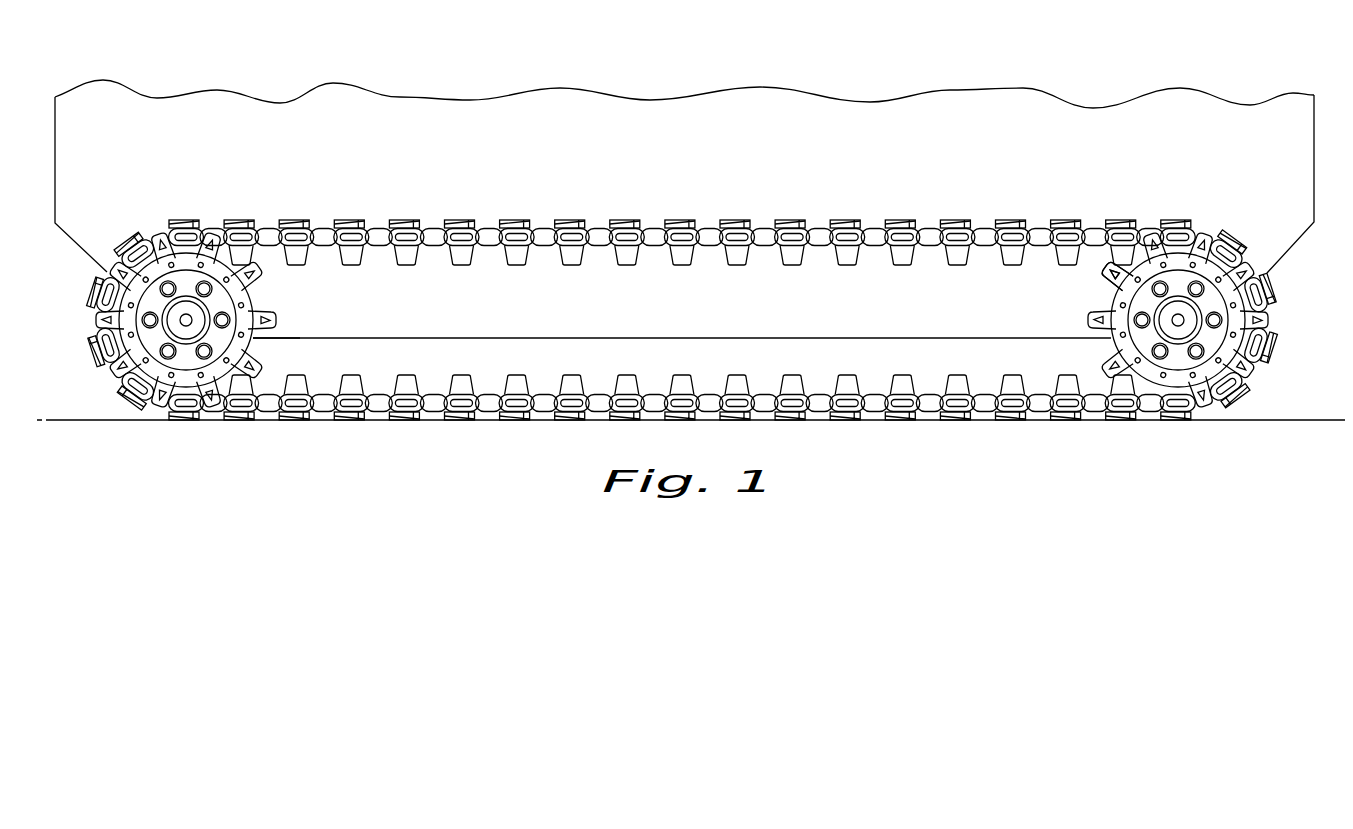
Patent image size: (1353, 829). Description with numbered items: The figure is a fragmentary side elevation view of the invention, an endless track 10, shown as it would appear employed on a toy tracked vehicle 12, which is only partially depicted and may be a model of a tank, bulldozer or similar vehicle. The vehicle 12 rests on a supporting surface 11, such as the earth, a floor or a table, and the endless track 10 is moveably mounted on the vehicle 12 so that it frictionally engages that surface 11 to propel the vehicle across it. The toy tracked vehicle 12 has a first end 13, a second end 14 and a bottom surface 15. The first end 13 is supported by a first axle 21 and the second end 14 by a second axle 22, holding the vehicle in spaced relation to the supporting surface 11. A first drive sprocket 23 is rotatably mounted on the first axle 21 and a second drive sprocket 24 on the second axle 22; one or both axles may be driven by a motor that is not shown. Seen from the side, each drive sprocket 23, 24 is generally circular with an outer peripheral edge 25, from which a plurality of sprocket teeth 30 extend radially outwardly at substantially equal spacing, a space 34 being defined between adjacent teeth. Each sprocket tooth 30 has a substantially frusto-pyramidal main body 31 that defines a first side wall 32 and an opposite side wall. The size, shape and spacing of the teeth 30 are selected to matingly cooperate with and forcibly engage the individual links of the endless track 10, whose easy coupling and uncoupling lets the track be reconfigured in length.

The endless track 10 is at (616, 190).
The supporting surface 11 is at (1275, 420).
The toy tracked vehicle 12 is at (975, 97).
The first end 13 is at (50, 113).
The second end 14 is at (1317, 108).
The bottom surface 15 is at (543, 339).
The first axle 21 is at (152, 288).
The second axle 22 is at (1221, 294).
The first drive sprocket 23 is at (187, 282).
The second drive sprocket 24 is at (1181, 282).
The outer peripheral edge 25 is at (258, 295).
The sprocket teeth 30 is at (1102, 373).
The main body 31 is at (273, 316).
The first side wall 32 is at (277, 338).
The space 34 is at (345, 353).